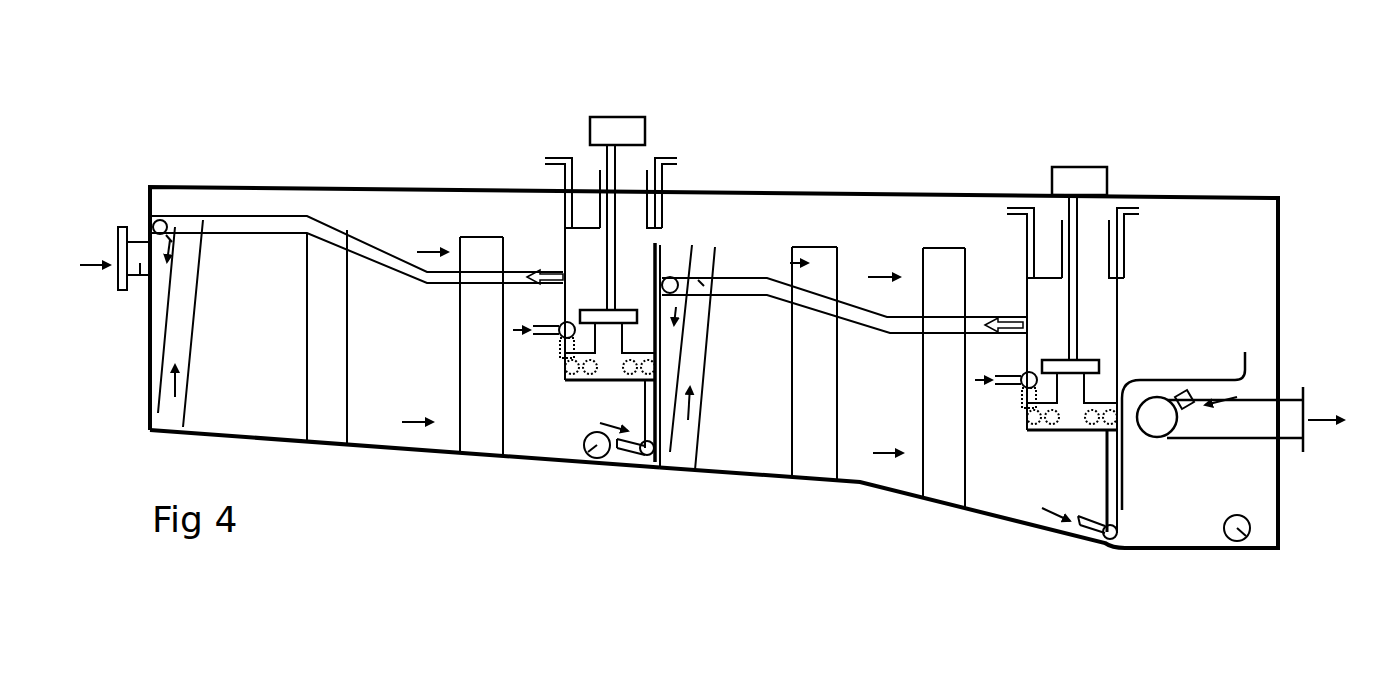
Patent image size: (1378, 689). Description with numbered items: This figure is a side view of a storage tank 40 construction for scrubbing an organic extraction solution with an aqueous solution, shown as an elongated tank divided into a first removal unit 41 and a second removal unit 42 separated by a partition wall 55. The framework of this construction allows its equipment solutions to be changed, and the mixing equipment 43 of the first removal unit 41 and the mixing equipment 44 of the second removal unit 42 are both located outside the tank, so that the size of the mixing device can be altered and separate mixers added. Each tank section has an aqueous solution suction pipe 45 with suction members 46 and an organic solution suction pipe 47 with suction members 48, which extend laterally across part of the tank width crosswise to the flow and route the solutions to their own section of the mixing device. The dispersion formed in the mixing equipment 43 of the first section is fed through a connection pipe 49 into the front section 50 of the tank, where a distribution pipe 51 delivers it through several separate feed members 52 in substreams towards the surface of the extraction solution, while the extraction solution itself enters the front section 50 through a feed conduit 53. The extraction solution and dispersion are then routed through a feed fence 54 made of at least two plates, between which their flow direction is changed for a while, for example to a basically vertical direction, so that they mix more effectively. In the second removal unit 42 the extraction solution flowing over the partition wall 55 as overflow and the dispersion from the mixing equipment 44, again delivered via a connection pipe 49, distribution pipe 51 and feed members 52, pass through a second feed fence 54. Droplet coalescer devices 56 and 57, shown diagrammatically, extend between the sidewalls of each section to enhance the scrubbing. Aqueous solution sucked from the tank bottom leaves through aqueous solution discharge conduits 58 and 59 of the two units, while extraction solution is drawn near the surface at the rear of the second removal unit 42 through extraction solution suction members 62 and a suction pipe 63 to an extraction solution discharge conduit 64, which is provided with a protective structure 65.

The storage tank 40 is at (729, 70).
The first removal unit 41 is at (362, 200).
The second removal unit 42 is at (940, 203).
The mixing equipment 43 is at (565, 248).
The mixing equipment 44 is at (1118, 233).
The aqueous solution suction pipe 45 is at (642, 456).
The suction members 46 is at (625, 452).
The organic solution suction pipe 47 is at (565, 343).
The suction members 48 is at (563, 323).
The connection pipe 49 is at (370, 248).
The front section 50 is at (152, 217).
The distribution pipe 51 is at (152, 226).
The feed members 52 is at (168, 236).
The feed conduit 53 is at (140, 276).
The feed fence 54 is at (185, 300).
The partition wall 55 is at (687, 472).
The droplet coalescer device 56 is at (345, 317).
The droplet coalescer device 57 is at (478, 396).
The aqueous solution discharge conduit 58 is at (580, 458).
The aqueous solution discharge conduit 59 is at (1240, 535).
The extraction solution suction members 62 is at (1186, 412).
The suction pipe 63 is at (1150, 400).
The extraction solution discharge conduit 64 is at (1300, 405).
The protective structure 65 is at (1195, 378).